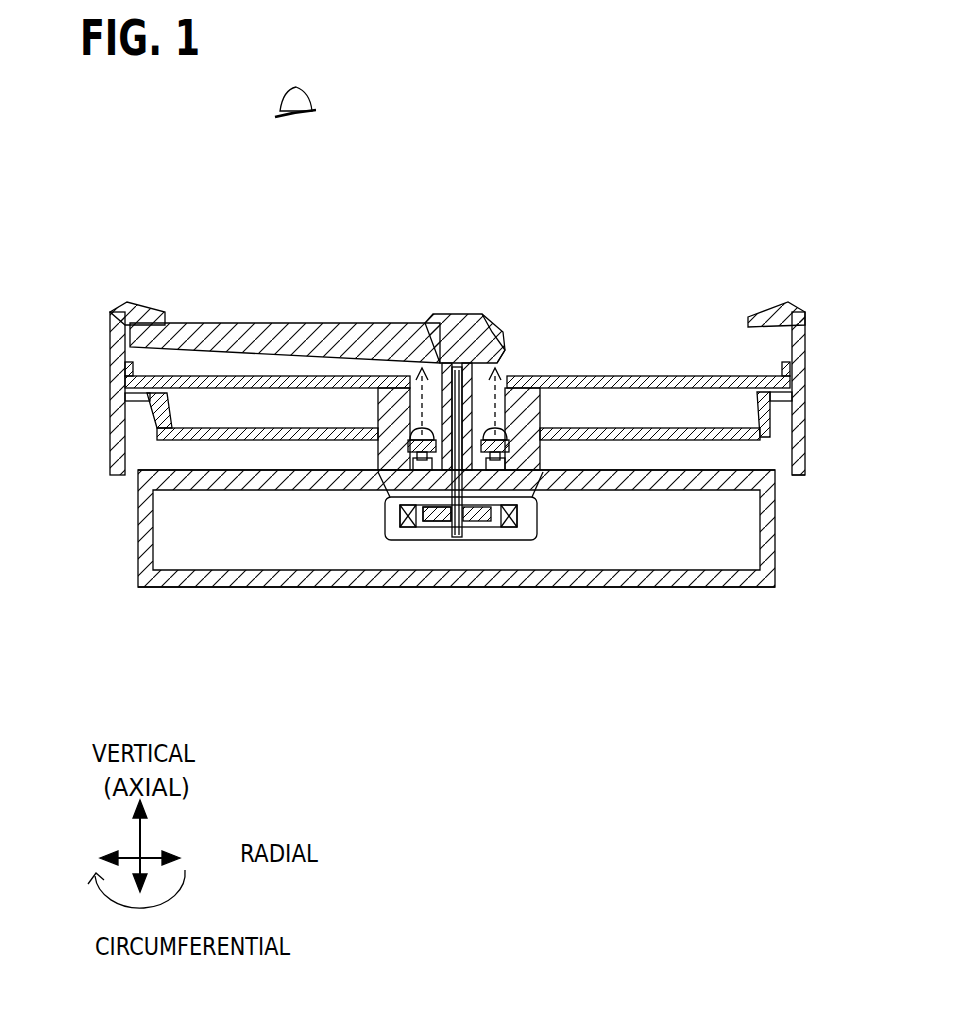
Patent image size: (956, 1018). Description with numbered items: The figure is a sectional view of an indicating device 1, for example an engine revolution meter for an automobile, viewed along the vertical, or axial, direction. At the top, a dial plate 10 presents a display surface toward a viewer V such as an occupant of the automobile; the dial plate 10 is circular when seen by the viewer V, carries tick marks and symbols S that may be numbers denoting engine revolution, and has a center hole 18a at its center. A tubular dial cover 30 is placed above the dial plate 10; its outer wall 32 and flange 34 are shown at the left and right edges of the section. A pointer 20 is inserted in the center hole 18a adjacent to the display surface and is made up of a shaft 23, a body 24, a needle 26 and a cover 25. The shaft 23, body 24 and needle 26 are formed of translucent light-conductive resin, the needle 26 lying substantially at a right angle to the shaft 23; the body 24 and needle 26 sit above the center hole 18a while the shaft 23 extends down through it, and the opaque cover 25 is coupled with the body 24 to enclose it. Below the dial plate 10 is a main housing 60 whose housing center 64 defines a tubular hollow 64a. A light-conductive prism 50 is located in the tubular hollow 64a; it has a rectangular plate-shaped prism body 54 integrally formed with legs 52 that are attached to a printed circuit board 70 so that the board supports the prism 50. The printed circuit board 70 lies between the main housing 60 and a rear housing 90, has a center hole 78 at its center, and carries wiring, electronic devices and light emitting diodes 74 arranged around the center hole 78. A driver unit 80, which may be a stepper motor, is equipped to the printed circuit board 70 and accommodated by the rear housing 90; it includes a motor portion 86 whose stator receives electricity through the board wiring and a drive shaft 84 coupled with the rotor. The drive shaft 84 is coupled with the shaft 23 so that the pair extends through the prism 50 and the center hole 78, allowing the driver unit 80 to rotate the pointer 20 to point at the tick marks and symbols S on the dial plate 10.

The indicating device 1 is at (835, 157).
The viewer V is at (306, 96).
The dial plate 10 is at (770, 368).
The center hole 18a is at (513, 373).
The pointer 20 is at (486, 252).
The shaft 23 is at (506, 352).
The body 24 is at (490, 328).
The cover 25 is at (460, 318).
The needle 26 is at (362, 322).
The dial cover 30 is at (772, 276).
The cover side wall 32 is at (112, 350).
The cover flange 34 is at (127, 303).
The symbols S is at (200, 395).
The prism 50 is at (512, 450).
The legs 52 is at (378, 490).
The prism body 54 is at (378, 453).
The main housing 60 is at (800, 483).
The housing center 64 is at (528, 410).
The tubular hollow 64a is at (380, 398).
The printed circuit board 70 is at (752, 494).
The light emitting diodes 74 is at (380, 518).
The center hole 78 is at (530, 528).
The driver unit 80 is at (527, 545).
The drive shaft 84 is at (445, 520).
The motor portion 86 is at (466, 540).
The rear housing 90 is at (758, 594).